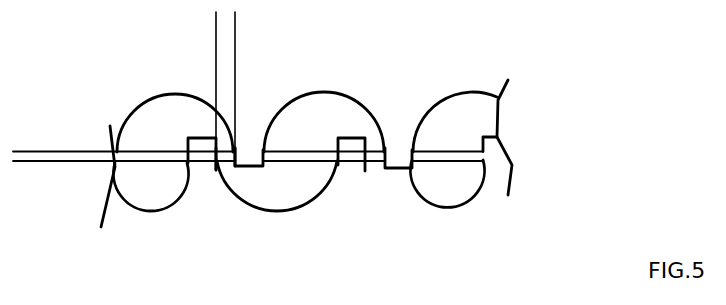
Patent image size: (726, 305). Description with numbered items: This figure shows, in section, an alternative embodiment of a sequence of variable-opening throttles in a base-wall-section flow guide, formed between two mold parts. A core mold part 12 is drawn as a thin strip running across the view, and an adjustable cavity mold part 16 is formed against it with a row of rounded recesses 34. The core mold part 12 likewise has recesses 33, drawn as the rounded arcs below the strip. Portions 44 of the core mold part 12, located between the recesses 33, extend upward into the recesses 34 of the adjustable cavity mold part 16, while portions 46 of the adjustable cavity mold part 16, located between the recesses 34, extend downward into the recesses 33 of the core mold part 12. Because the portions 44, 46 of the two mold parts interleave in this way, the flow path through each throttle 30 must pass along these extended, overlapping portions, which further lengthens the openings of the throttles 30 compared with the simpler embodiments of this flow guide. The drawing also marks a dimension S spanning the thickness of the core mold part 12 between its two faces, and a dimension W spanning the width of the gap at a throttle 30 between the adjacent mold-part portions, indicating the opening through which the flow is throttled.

The core mold part 12 is at (515, 229).
The adjustable cavity mold part 16 is at (488, 52).
The throttles 30 is at (220, 148).
The recesses 33 is at (282, 200).
The recesses 34 is at (170, 100).
The portions of the core mold part 44 is at (205, 138).
The portions of the adjustable cavity mold part 46 is at (247, 166).
The sheet thickness dimension S is at (38, 175).
The slit width dimension W is at (167, 33).